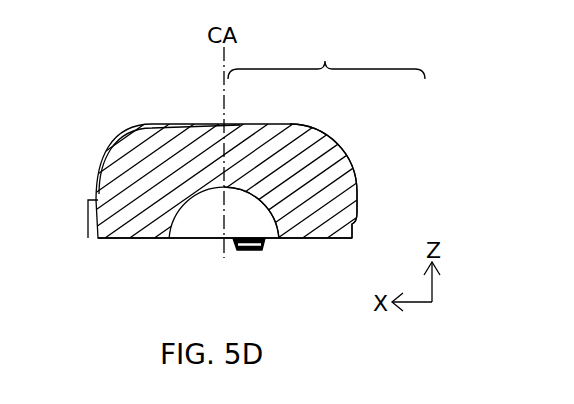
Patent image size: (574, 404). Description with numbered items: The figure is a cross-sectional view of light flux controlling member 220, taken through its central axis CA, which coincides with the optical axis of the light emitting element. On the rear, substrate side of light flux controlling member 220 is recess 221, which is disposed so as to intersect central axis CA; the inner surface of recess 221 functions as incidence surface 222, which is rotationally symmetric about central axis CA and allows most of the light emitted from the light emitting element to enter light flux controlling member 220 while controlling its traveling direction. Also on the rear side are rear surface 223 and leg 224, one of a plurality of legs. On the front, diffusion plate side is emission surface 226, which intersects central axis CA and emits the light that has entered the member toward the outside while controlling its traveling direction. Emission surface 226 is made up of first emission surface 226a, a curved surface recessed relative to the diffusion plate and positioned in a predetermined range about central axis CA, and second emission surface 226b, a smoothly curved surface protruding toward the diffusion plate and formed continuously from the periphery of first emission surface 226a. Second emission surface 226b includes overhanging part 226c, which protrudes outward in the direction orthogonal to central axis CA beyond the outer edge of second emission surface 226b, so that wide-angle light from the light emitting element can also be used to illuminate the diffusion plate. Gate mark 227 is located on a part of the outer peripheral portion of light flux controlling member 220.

The light flux controlling member 220 is at (262, 178).
The recess 221 is at (261, 222).
The incidence surface 222 is at (172, 207).
The rear surface 223 is at (110, 239).
The leg 224 is at (249, 252).
The emission surface 226 is at (326, 58).
The first emission surface 226a is at (233, 125).
The second emission surface 226b is at (338, 143).
The overhanging part 226c is at (360, 216).
The gate mark 227 is at (88, 218).